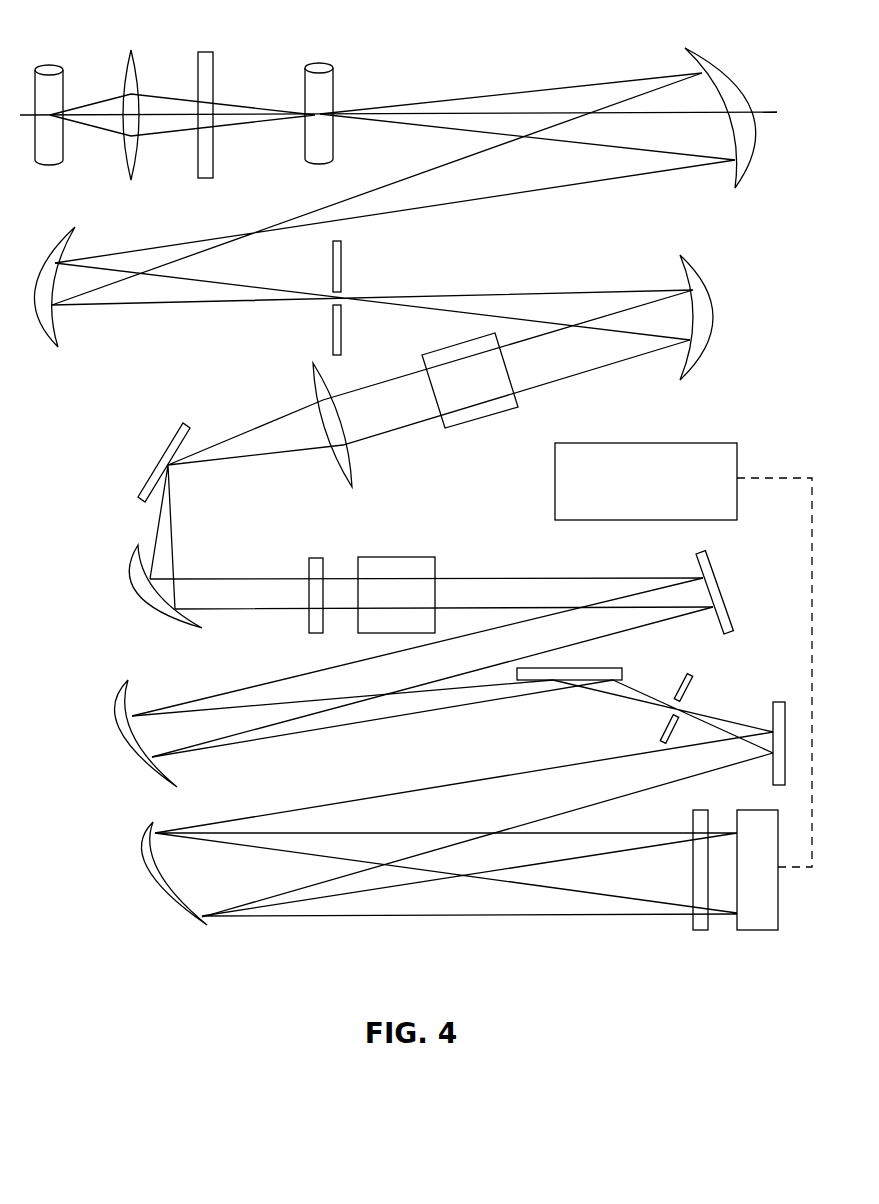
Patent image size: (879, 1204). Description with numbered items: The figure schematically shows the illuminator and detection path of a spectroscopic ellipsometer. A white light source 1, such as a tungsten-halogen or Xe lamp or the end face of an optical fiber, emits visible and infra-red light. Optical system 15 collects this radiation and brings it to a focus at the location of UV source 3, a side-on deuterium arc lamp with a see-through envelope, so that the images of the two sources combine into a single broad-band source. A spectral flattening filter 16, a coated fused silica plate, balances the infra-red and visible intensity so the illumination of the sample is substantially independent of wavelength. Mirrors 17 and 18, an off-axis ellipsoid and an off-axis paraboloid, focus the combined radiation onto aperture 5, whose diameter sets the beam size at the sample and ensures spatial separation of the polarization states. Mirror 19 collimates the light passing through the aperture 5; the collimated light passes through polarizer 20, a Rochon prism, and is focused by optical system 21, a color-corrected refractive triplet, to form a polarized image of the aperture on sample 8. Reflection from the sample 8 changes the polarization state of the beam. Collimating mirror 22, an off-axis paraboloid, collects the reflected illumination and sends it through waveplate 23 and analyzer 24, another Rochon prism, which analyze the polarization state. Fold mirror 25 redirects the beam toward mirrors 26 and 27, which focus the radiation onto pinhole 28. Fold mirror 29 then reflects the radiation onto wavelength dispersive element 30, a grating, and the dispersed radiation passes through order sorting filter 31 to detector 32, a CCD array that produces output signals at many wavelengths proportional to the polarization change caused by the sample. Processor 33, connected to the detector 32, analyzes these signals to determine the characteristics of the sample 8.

The light source 1 is at (65, 76).
The optical system 15 is at (136, 62).
The spectral flattening filter 16 is at (207, 51).
The UV source 3 is at (318, 63).
The mirror 17 is at (706, 62).
The mirror 18 is at (73, 226).
The aperture 5 is at (342, 247).
The mirror 19 is at (697, 265).
The polarizer 20 is at (438, 352).
The optical system 21 is at (320, 372).
The sample 8 is at (179, 430).
The collimating mirror 22 is at (134, 557).
The waveplate 23 is at (316, 557).
The analyzer 24 is at (400, 557).
The fold mirror 25 is at (716, 577).
The mirror 26 is at (122, 695).
The mirror 27 is at (607, 667).
The pinhole 28 is at (693, 673).
The fold mirror 29 is at (782, 702).
The wavelength dispersive element 30 is at (147, 864).
The order sorting filter 31 is at (700, 932).
The detector 32 is at (757, 932).
The processor 33 is at (646, 481).